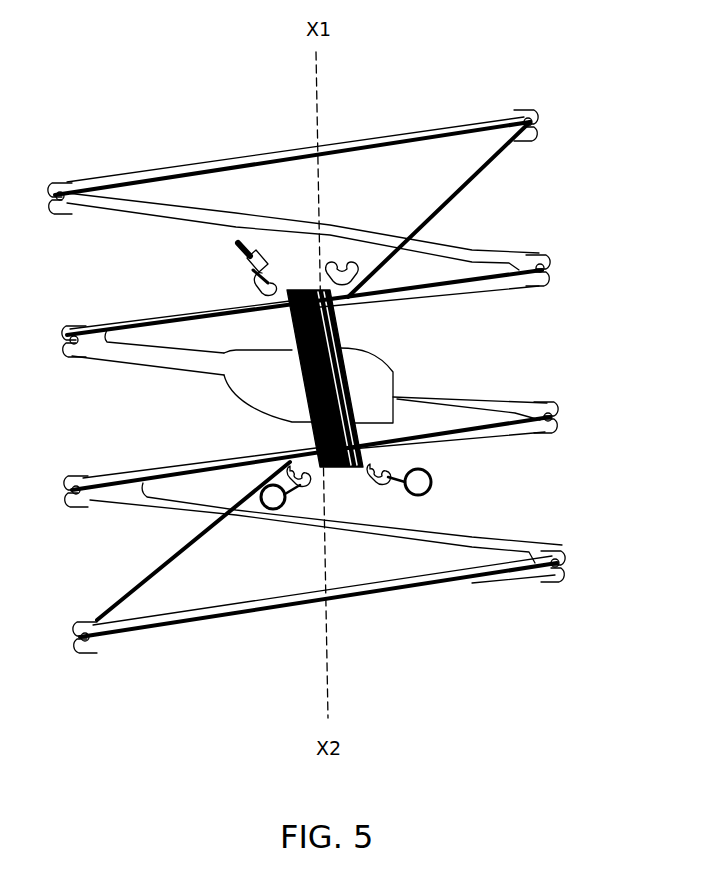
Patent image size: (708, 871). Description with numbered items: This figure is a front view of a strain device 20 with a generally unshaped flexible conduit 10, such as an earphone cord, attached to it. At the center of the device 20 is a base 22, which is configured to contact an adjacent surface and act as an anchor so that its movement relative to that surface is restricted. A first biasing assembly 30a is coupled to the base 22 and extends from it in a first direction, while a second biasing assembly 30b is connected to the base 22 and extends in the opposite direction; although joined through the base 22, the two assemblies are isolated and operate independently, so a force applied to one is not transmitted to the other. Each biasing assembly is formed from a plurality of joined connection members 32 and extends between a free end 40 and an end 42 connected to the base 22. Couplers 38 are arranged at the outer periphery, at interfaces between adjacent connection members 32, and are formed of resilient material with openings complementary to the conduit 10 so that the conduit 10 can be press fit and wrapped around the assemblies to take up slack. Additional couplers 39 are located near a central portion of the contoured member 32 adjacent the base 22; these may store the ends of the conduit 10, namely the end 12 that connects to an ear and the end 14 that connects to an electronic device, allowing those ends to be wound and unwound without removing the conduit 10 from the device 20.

The strain device 20 is at (86, 89).
The flexible conduit 10 is at (121, 190).
The free end 40 is at (513, 115).
The couplers 39 is at (350, 262).
The end of the earphones configured to connect to an electronic device 14 is at (238, 262).
The end of the biasing assembly connected to the base 42 is at (220, 355).
The base 22 is at (340, 368).
The first biasing assembly 30a is at (572, 253).
The couplers 38 is at (74, 362).
The end of the earphones configured to connect to an ear 12 is at (283, 508).
The connection members 32 is at (446, 537).
The second biasing assembly 30b is at (598, 578).